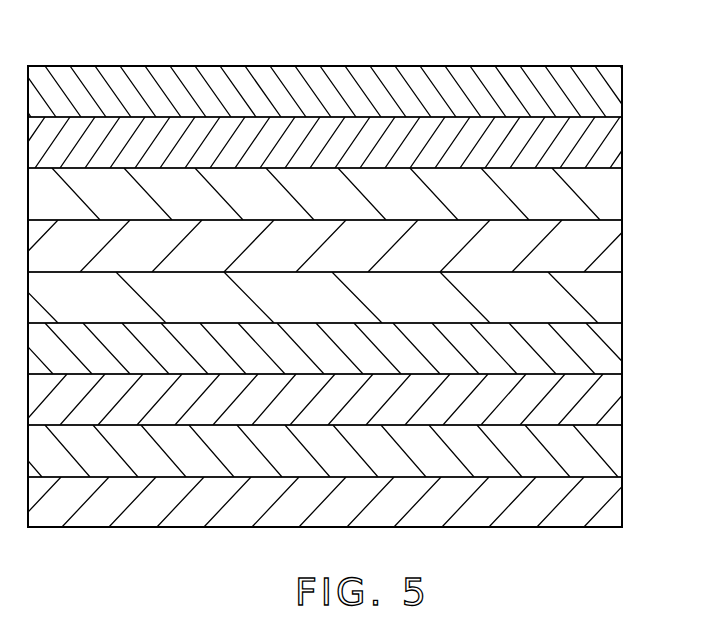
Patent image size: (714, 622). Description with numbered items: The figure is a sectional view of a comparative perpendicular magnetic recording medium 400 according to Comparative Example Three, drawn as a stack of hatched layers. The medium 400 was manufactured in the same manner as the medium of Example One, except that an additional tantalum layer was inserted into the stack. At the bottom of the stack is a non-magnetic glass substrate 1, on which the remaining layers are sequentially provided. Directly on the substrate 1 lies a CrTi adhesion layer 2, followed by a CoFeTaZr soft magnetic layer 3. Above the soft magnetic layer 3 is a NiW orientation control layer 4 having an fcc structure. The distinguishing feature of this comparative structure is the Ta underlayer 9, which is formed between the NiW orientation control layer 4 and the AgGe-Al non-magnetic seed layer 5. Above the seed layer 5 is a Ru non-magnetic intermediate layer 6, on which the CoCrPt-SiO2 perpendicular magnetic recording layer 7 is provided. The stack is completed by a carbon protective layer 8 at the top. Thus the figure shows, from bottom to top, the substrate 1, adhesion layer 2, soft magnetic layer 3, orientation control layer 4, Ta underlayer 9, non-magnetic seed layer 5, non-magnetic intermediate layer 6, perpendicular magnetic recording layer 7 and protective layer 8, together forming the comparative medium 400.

The perpendicular magnetic recording medium 400 is at (593, 56).
The non-magnetic glass substrate 1 is at (612, 503).
The adhesion layer 2 is at (612, 452).
The soft magnetic layer 3 is at (612, 402).
The orientation control layer 4 is at (612, 350).
The non-magnetic seed layer 5 is at (612, 247).
The non-magnetic intermediate layer 6 is at (612, 196).
The perpendicular magnetic recording layer 7 is at (612, 144).
The protective layer 8 is at (612, 91).
The Ta underlayer 9 is at (612, 298).